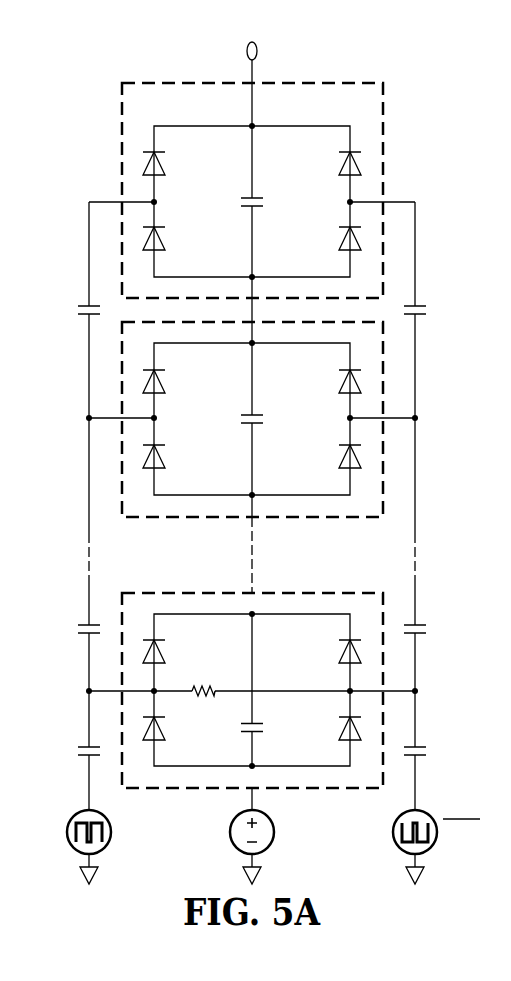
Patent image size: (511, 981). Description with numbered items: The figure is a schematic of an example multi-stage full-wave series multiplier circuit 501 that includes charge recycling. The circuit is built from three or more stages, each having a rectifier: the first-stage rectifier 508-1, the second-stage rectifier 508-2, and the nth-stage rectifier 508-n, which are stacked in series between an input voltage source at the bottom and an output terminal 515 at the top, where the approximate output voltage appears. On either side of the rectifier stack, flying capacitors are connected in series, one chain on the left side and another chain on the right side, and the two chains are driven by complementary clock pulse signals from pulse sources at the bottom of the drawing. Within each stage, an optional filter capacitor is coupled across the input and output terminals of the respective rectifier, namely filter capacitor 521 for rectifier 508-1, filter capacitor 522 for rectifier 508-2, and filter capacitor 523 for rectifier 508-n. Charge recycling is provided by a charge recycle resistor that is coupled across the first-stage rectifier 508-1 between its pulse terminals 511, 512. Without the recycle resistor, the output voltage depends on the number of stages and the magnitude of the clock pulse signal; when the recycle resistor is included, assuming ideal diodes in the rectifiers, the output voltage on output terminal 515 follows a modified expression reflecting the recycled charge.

The multi-stage full-wave series multiplier circuit 501 is at (75, 80).
The output terminal 515 is at (247, 50).
The rectifier 508-n is at (118, 136).
The rectifier 508-2 is at (305, 521).
The rectifier 508-1 is at (199, 590).
The filter capacitor 523 is at (250, 182).
The filter capacitor 522 is at (250, 398).
The filter capacitor 521 is at (242, 727).
The pulse terminal 511 is at (157, 689).
The pulse terminal 512 is at (347, 689).